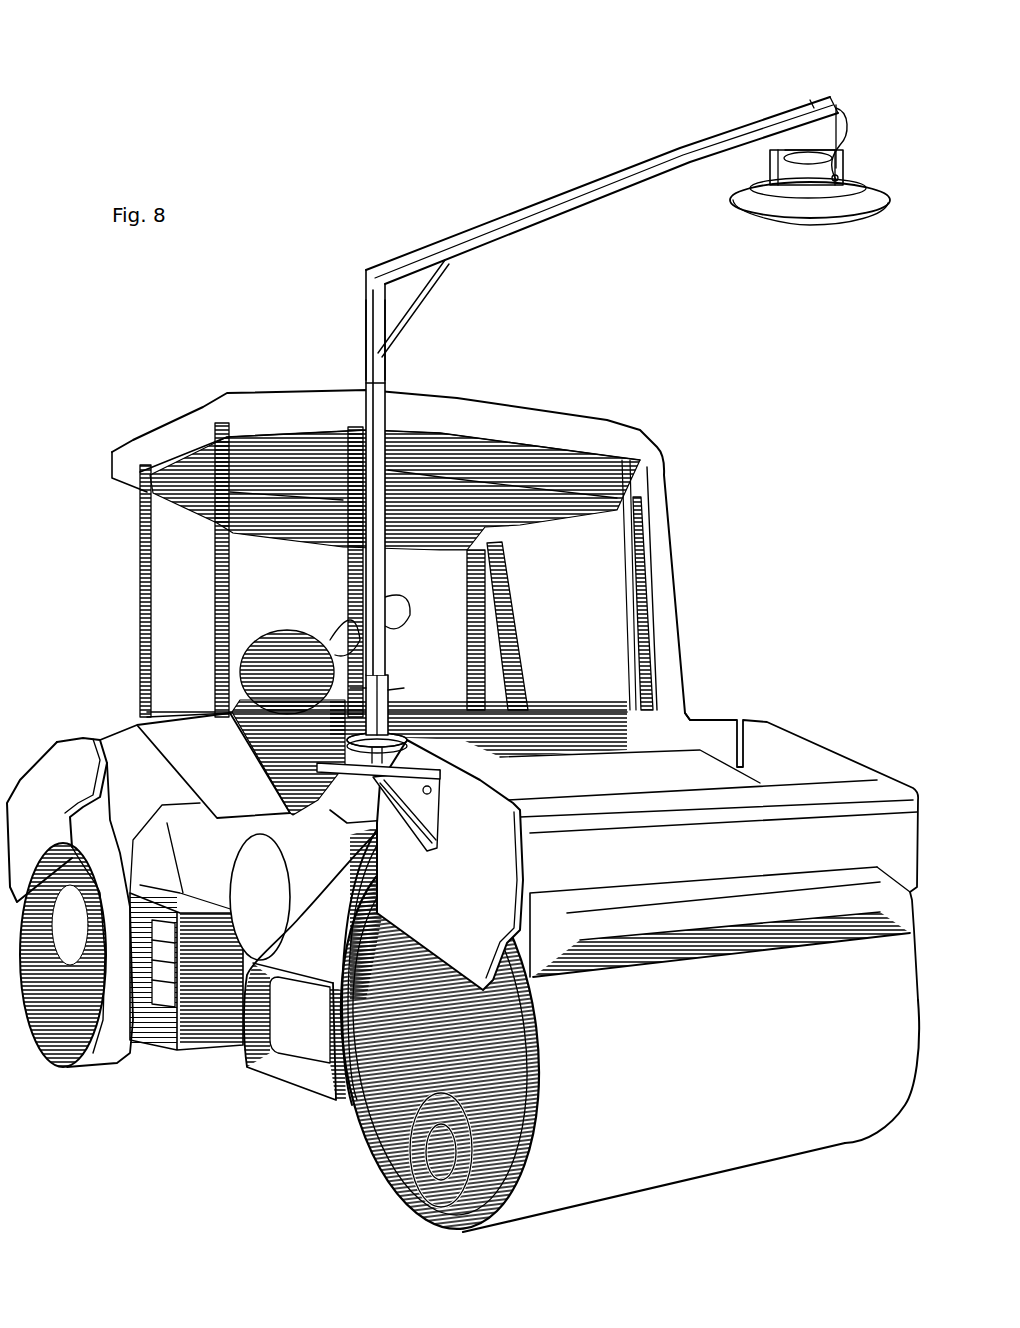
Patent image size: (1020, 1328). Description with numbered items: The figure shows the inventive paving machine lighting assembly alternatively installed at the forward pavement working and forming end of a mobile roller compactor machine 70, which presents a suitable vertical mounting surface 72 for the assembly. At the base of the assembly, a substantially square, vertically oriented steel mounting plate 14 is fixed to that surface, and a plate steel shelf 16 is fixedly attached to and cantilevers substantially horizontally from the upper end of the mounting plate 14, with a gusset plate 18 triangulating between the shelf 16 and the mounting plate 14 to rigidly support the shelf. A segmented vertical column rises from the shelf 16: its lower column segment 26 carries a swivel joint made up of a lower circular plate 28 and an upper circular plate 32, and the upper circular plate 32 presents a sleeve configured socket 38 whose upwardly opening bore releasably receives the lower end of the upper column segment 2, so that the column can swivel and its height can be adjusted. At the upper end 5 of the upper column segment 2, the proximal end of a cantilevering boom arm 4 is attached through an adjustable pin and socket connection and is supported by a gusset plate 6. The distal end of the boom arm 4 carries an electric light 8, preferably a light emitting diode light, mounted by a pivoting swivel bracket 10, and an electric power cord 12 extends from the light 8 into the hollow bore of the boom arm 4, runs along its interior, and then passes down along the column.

The upper column segment 2 is at (383, 510).
The boom arm 4 is at (463, 237).
The upper end of the upper segment 5 is at (372, 365).
The gusset plate 6 is at (405, 300).
The electric light 8 is at (835, 213).
The pivoting swivel bracket 10 is at (765, 160).
The electric power cord 12 is at (853, 145).
The mounting plate 14 is at (510, 791).
The shelf 16 is at (330, 775).
The gusset plate 18 is at (423, 820).
The lower column segment 26 is at (330, 760).
The lower circular plate 28 is at (347, 737).
The upper circular plate 32 is at (347, 737).
The sleeve configured socket 38 is at (386, 712).
The mobile roller compactor machine 70 is at (680, 541).
The vertical mounting surface 72 is at (340, 830).